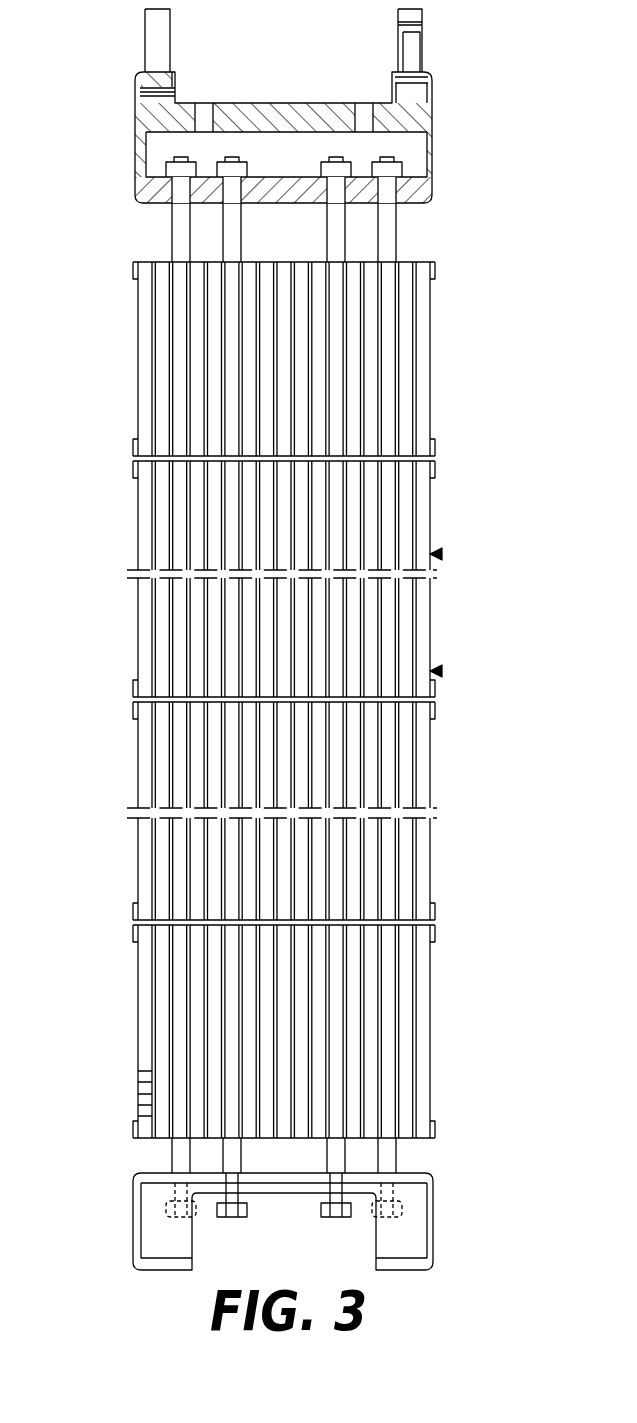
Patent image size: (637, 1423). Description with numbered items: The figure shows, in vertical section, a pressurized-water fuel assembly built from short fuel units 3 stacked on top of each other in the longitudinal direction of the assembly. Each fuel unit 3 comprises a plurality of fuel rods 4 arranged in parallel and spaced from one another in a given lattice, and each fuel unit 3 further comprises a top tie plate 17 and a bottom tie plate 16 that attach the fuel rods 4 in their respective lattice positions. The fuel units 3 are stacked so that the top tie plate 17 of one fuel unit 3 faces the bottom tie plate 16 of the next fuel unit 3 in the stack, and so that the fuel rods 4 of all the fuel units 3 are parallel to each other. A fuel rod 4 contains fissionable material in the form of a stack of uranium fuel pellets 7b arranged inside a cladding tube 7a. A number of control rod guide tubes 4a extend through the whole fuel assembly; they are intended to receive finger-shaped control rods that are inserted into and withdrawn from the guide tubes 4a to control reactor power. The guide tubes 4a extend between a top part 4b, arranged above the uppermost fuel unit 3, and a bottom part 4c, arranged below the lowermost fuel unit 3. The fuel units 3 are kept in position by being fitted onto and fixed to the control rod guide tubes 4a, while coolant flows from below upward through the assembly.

The fuel unit 3 is at (277, 700).
The fuel rod 4 is at (173, 400).
The control rod guide tube 4a is at (331, 227).
The top part 4b is at (420, 191).
The bottom part 4c is at (418, 1237).
The bottom tie plate 16 is at (133, 690).
The top tie plate 17 is at (133, 708).
The cladding tube 7a is at (138, 1037).
The fuel pellets 7b is at (142, 1120).